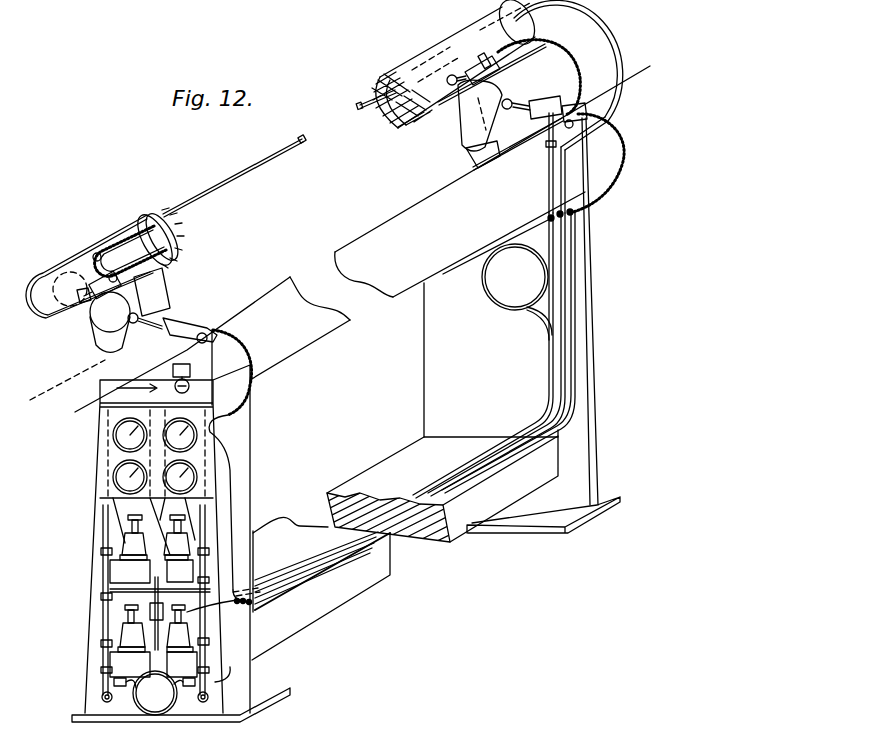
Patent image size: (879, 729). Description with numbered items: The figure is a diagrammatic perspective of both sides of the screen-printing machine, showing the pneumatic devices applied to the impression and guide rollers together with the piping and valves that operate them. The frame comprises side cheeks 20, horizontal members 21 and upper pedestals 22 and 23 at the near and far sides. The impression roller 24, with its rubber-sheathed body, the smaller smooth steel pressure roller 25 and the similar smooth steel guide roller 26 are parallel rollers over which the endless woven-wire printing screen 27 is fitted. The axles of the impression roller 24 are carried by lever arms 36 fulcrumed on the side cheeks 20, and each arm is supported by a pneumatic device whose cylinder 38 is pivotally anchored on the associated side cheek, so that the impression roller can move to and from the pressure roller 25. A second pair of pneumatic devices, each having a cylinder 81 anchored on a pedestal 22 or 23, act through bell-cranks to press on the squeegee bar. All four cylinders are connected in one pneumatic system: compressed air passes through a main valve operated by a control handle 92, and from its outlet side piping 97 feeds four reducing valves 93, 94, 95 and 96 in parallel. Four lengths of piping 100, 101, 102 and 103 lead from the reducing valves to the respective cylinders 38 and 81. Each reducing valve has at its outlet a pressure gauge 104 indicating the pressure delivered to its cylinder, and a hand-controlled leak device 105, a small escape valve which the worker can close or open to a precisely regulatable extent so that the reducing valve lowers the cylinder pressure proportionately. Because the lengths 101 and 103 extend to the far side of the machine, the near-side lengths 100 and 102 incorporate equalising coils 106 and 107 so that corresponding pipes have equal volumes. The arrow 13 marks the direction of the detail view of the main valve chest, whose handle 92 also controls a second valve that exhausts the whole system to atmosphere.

The arrow 13 is at (137, 378).
The side cheeks 20 is at (572, 214).
The horizontal members 21 is at (303, 337).
The upper pedestal 22 is at (110, 371).
The upper pedestal 23 is at (521, 94).
The impression roller 24 is at (518, 63).
The pressure roller 25 is at (60, 318).
The guide roller 26 is at (125, 224).
The endless printing screen 27 is at (152, 213).
The lever arms 36 is at (461, 124).
The cylinder 38 is at (541, 121).
The cylinder 81 is at (456, 53).
The control handle 92 is at (243, 389).
The reducing valve 93 is at (193, 631).
The reducing valve 94 is at (174, 543).
The reducing valve 95 is at (123, 632).
The reducing valve 96 is at (126, 543).
The piping 97 is at (133, 580).
The length of piping 100 is at (222, 686).
The length of piping 101 is at (268, 617).
The length of piping 102 is at (120, 677).
The length of piping 103 is at (230, 592).
The pressure gauge 104 is at (114, 470).
The hand-controlled leak device 105 is at (102, 697).
The equalising coil 106 is at (154, 712).
The equalising coil 107 is at (490, 303).